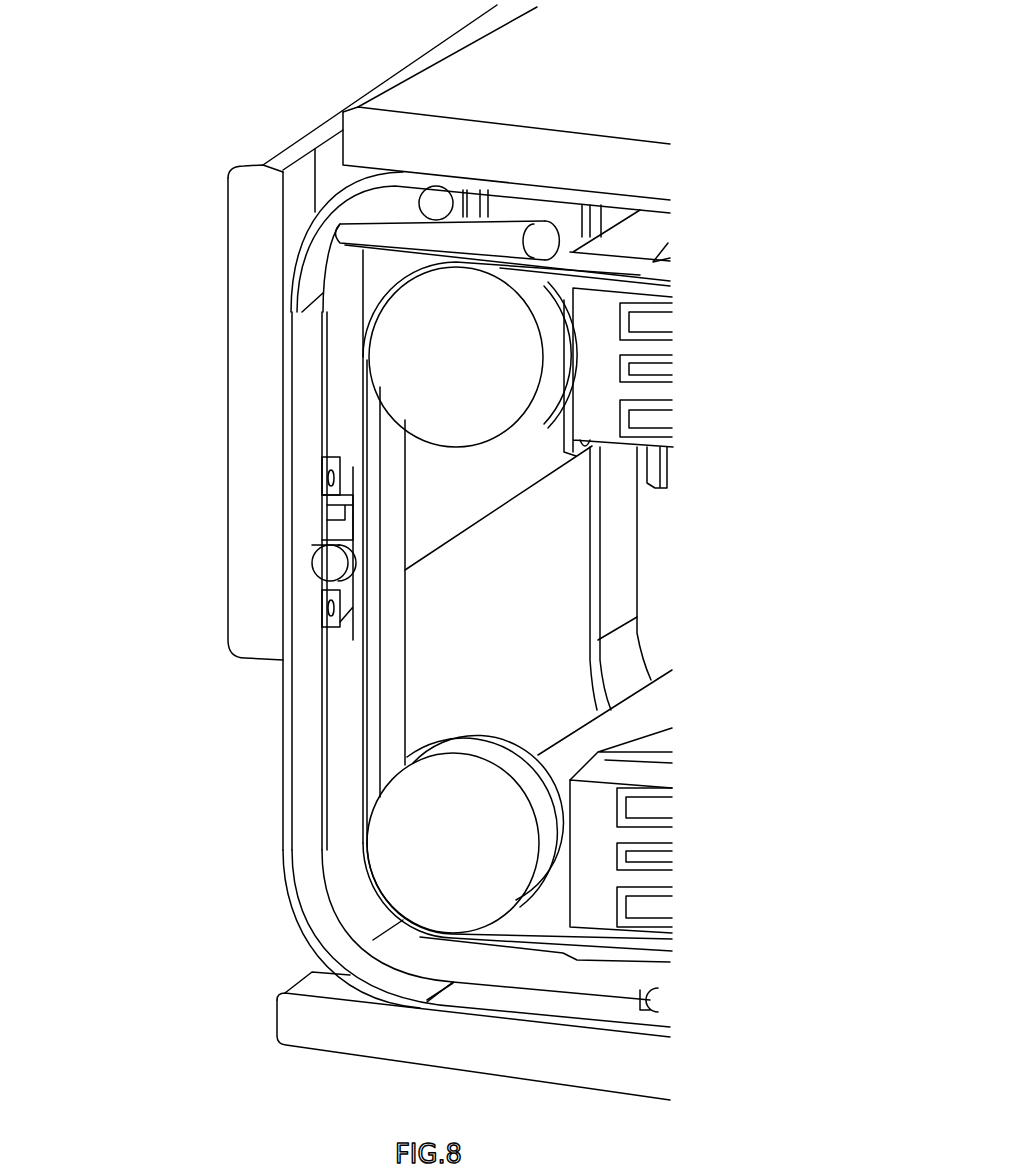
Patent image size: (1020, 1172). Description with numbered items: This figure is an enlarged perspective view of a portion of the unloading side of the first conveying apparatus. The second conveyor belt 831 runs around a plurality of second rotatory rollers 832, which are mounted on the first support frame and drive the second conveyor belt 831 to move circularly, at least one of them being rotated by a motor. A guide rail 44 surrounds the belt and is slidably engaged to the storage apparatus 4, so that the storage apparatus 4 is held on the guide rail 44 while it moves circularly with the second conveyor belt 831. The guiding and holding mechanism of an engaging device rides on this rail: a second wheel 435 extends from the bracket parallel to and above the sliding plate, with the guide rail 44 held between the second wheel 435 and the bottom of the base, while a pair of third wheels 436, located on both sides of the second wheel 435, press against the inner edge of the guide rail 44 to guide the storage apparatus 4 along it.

The storage apparatus 4 is at (250, 360).
The guide rail 44 is at (313, 900).
The second wheel 435 is at (323, 563).
The third wheels 436 is at (332, 517).
The second conveyor belt 831 is at (367, 712).
The second rotatory rollers 832 is at (443, 837).